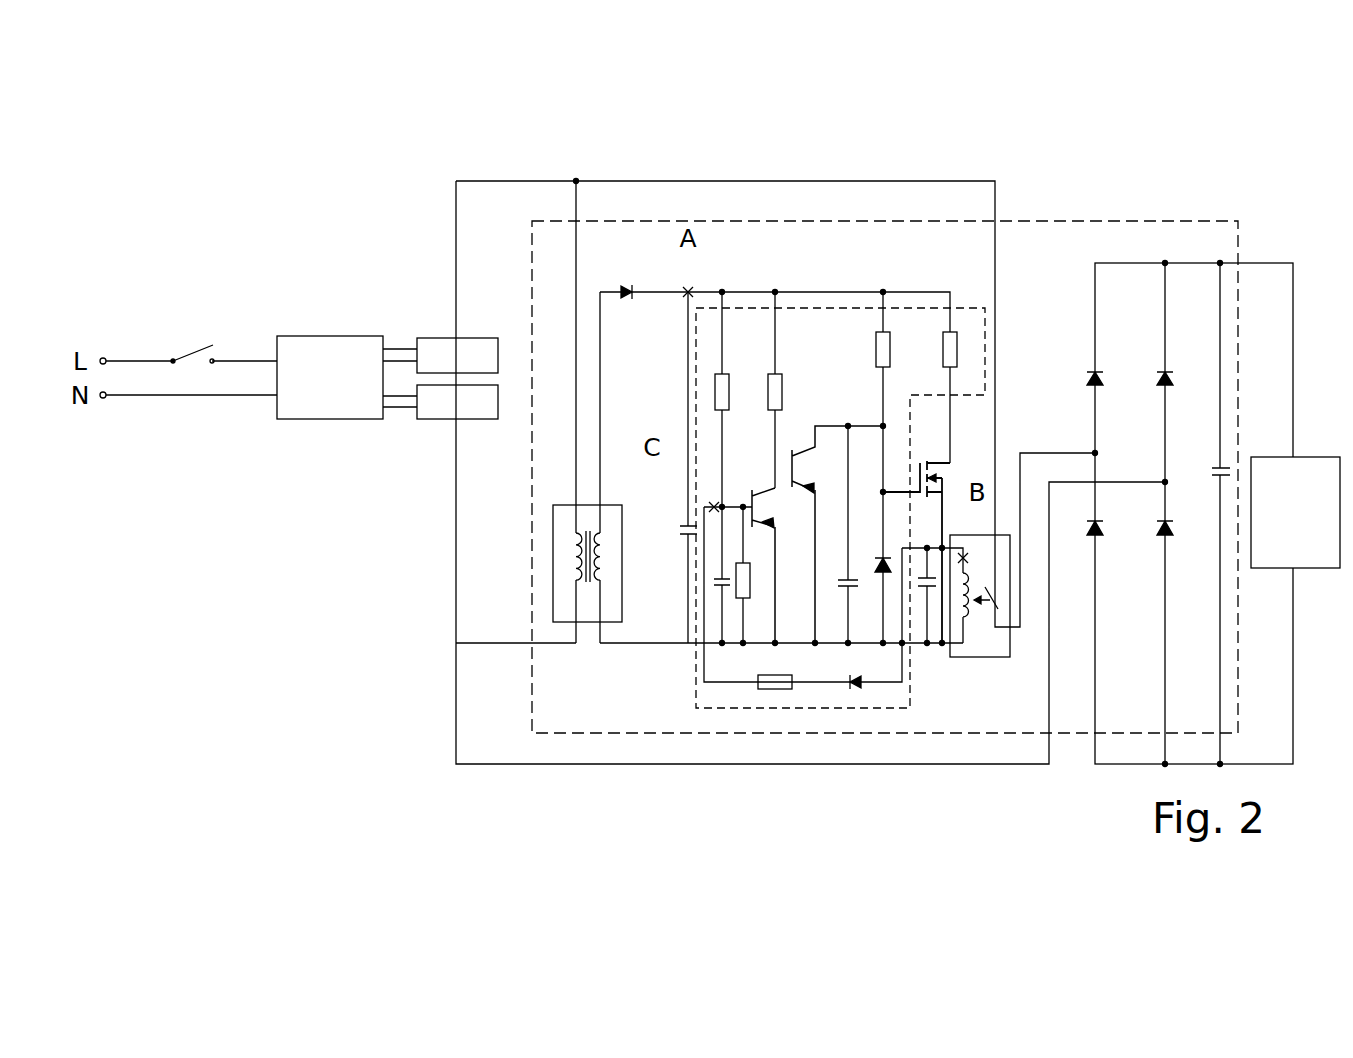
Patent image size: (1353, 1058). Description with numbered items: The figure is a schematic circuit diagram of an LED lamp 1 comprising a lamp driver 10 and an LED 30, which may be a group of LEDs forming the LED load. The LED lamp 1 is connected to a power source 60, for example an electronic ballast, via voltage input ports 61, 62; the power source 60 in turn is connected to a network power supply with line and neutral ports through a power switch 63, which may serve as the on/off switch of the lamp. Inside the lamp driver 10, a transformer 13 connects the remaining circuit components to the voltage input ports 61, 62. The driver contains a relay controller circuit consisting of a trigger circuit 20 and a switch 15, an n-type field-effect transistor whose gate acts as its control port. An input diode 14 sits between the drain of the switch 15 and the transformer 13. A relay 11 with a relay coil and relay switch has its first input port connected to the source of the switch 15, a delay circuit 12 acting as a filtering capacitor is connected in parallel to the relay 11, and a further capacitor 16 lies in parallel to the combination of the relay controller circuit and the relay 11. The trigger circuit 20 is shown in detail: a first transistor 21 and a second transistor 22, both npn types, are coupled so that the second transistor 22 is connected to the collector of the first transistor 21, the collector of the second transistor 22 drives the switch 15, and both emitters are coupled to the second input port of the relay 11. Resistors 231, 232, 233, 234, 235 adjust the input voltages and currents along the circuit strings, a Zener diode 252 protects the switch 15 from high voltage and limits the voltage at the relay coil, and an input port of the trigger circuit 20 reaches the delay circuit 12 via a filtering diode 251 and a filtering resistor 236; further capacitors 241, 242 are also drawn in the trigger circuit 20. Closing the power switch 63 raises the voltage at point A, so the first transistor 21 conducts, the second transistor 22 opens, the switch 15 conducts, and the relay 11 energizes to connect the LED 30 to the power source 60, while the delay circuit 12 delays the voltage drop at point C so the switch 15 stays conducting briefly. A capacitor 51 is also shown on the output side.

The LED lamp 1 is at (1203, 190).
The lamp driver 10 is at (1098, 220).
The relay 11 is at (985, 660).
The delay circuit 12 is at (930, 590).
The transformer 13 is at (593, 624).
The input diode 14 is at (628, 288).
The switch 15 is at (936, 466).
The further capacitor 16 is at (680, 530).
The trigger circuit 20 is at (840, 307).
The first transistor 21 is at (768, 507).
The second transistor 22 is at (802, 472).
The LED 30 is at (1281, 528).
The capacitor 51 is at (1212, 470).
The power source 60 is at (318, 391).
The voltage input port 61 is at (442, 369).
The voltage input port 62 is at (442, 415).
The power switch 63 is at (186, 349).
The resistor 231 is at (729, 394).
The resistor 232 is at (782, 394).
The resistor 233 is at (880, 343).
The resistor 234 is at (947, 343).
The resistor 235 is at (750, 576).
The filtering resistor 236 is at (770, 676).
The capacitor 241 is at (838, 577).
The capacitor 242 is at (712, 582).
The filtering diode 251 is at (855, 676).
The Zener diode 252 is at (876, 566).